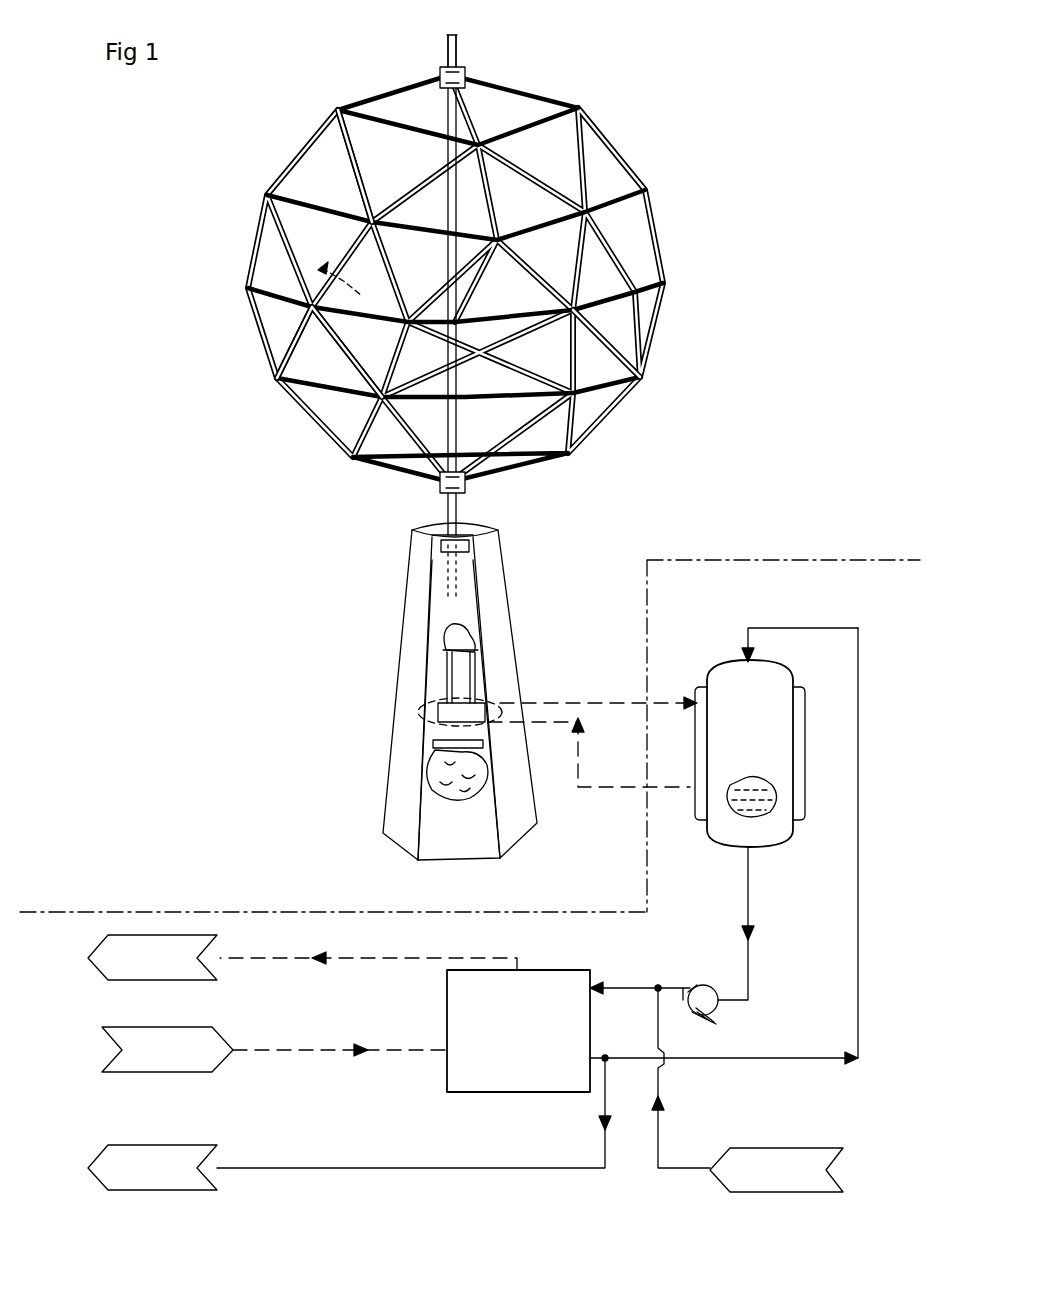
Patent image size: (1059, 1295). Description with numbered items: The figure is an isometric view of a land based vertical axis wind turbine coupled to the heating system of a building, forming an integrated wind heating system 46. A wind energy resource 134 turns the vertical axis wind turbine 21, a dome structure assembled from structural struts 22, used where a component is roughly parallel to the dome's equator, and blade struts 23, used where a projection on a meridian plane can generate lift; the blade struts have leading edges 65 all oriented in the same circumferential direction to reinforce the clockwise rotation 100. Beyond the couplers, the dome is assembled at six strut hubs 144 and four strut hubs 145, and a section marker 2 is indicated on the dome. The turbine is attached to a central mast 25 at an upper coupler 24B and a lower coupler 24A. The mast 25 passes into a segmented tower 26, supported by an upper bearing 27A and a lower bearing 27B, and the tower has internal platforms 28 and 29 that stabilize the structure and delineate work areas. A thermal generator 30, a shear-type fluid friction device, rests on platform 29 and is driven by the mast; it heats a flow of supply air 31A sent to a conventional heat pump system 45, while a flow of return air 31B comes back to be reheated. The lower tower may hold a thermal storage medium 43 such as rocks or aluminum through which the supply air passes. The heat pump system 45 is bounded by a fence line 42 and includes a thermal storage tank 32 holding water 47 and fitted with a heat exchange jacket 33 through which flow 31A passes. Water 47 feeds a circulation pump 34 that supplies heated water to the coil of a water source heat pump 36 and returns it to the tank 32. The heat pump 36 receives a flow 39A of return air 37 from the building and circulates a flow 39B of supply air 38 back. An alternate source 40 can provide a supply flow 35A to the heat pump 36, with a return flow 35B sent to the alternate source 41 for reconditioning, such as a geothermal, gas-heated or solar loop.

The rotation 100 is at (432, 33).
The central mast 25 is at (458, 52).
The upper coupler 24B is at (443, 78).
The lower coupler 24A is at (468, 490).
The vertical axis wind turbine 21 is at (459, 285).
The structural struts 22 is at (618, 208).
The blade struts 23 is at (640, 296).
The six strut hub 144 is at (353, 182).
The four strut hub 145 is at (590, 382).
The leading edges 65 is at (332, 358).
The wind energy resource 134 is at (228, 235).
The section line 2 is at (346, 272).
The integrated wind heating system 46 is at (124, 506).
The segmented tower 26 is at (412, 578).
The upper bearing 27A is at (500, 545).
The lower bearing 27B is at (506, 710).
The internal platform 28 is at (448, 638).
The thermal generator 30 is at (452, 714).
The internal platform 29 is at (436, 752).
The thermal storage medium 43 is at (423, 775).
The flow of supply air 31A is at (578, 702).
The flow of return air 31B is at (598, 795).
The fence line 42 is at (825, 555).
The thermal storage tank 32 is at (782, 843).
The heat exchange jacket 33 is at (800, 805).
The water 47 is at (737, 808).
The circulation pump 34 is at (716, 1007).
The supply flow 35A is at (623, 985).
The return flow 35B is at (597, 1064).
The water source heat pump 36 is at (518, 1031).
The return air 37 is at (167, 1049).
The supply air 38 is at (152, 957).
The flow of return air 39A is at (340, 1069).
The flow of supply air 39B is at (368, 977).
The alternate source 40 is at (776, 1170).
The alternate source 41 is at (152, 1167).
The heat pump system 45 is at (70, 1020).